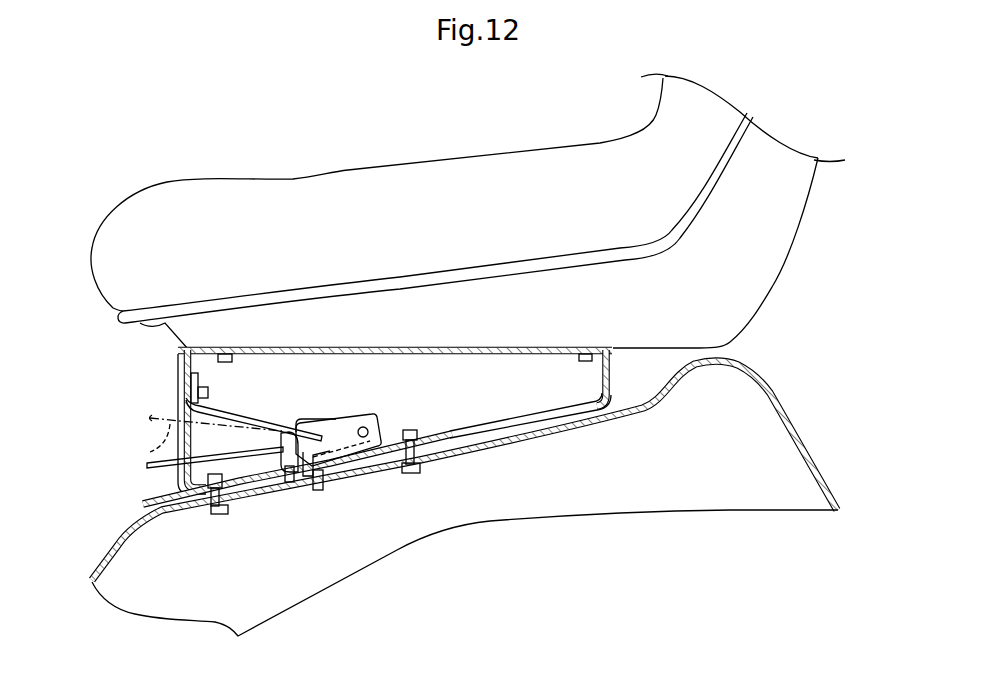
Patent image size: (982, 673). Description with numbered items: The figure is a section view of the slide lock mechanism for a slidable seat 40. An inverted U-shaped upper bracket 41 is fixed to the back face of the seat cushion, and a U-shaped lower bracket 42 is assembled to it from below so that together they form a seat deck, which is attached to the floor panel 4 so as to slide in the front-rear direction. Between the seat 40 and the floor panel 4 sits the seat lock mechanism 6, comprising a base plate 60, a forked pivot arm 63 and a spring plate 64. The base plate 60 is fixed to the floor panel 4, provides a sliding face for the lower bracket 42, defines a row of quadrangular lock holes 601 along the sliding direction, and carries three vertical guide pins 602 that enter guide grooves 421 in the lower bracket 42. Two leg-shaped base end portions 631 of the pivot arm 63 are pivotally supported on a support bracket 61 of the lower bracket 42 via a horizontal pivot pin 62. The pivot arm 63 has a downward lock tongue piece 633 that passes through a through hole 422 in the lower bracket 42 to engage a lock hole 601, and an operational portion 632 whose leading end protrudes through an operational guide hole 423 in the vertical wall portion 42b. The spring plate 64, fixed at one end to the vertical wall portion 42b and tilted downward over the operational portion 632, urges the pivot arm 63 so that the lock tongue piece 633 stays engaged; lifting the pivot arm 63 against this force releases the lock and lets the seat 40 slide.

The floor panel 4 is at (772, 393).
The seat lock mechanism 6 is at (230, 427).
The seat 40 is at (331, 173).
The upper bracket 41 is at (505, 356).
The lower bracket 42 is at (611, 379).
The vertical wall portion 42b is at (190, 375).
The base plate 60 is at (393, 455).
The support bracket 61 is at (368, 412).
The horizontal pivot pin 62 is at (370, 431).
The pivot arm 63 is at (340, 424).
The spring plate 64 is at (249, 425).
The guide grooves 421 is at (522, 418).
The through hole 422 is at (340, 464).
The operational guide hole 423 is at (180, 469).
The lock holes 601 is at (257, 495).
The guide pins 602 is at (222, 515).
The base end portions 631 is at (334, 432).
The operational portion 632 is at (157, 444).
The lock tongue piece 633 is at (300, 484).